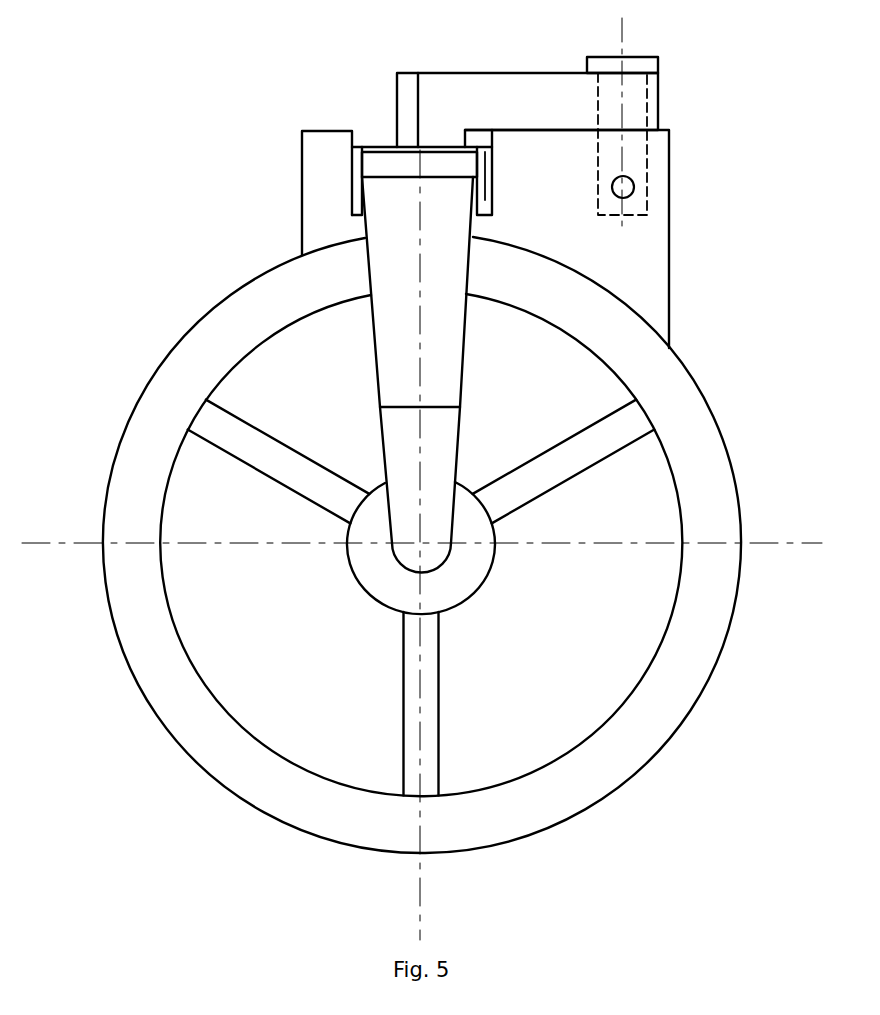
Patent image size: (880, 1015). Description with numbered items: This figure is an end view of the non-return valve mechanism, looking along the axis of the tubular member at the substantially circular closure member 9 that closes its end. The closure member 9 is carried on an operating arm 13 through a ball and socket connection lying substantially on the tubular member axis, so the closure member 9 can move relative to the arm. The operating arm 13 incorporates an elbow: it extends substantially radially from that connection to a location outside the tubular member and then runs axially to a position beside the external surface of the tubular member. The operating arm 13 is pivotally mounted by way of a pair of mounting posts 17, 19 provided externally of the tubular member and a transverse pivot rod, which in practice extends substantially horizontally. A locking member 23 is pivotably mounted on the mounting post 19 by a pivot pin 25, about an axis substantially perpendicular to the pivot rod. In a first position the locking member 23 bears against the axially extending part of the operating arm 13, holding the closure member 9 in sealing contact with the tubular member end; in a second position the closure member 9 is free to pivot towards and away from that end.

The closure member 9 is at (712, 482).
The operating arm 13 is at (440, 378).
The mounting post 17 is at (302, 175).
The mounting post 19 is at (667, 160).
The locking member 23 is at (465, 73).
The pivot pin 25 is at (658, 60).